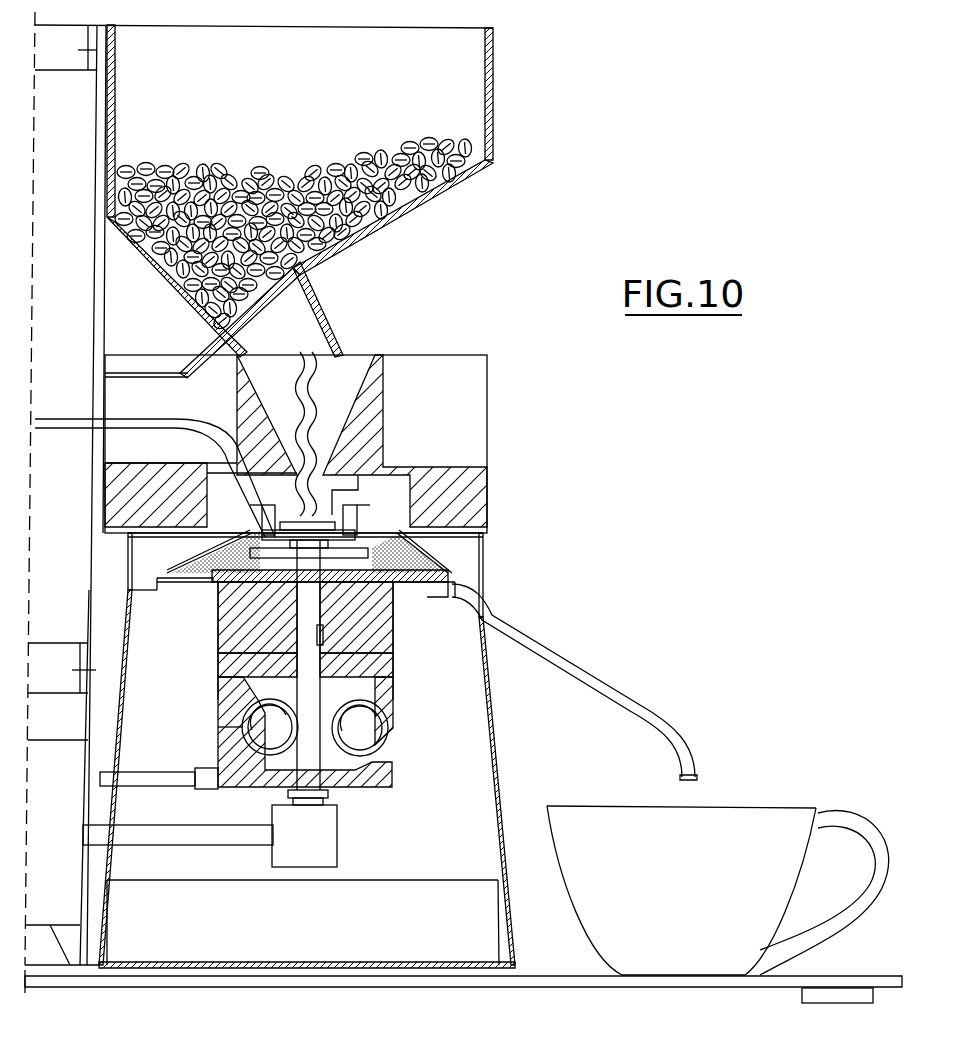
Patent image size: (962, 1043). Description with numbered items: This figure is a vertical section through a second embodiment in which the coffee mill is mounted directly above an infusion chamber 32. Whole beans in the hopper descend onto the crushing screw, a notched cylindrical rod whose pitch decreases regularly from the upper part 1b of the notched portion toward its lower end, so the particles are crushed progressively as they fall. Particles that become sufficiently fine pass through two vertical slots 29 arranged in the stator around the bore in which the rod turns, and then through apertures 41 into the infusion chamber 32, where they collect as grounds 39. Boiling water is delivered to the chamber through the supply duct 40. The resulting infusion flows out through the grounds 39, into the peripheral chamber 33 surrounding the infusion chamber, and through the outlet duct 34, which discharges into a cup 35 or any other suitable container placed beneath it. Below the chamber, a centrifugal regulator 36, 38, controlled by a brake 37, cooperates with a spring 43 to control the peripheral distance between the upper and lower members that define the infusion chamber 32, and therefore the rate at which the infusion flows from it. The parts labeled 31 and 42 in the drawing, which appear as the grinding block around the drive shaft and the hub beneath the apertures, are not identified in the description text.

The upper part of the notched part 1b is at (302, 435).
The vertical slots 29 is at (297, 497).
The grinding mechanism block 31 is at (305, 615).
The infusion chamber 32 is at (440, 553).
The peripheral chamber 33 is at (463, 585).
The outlet duct 34 is at (625, 698).
The cup 35 is at (742, 840).
The centrifugal regulator 36 is at (410, 658).
The brake 37 is at (208, 775).
The centrifugal regulator 38 is at (372, 780).
The grounds 39 is at (172, 563).
The supply duct 40 is at (147, 422).
The apertures 41 is at (287, 515).
The hub flange 42 is at (372, 537).
The spring 43 is at (267, 560).